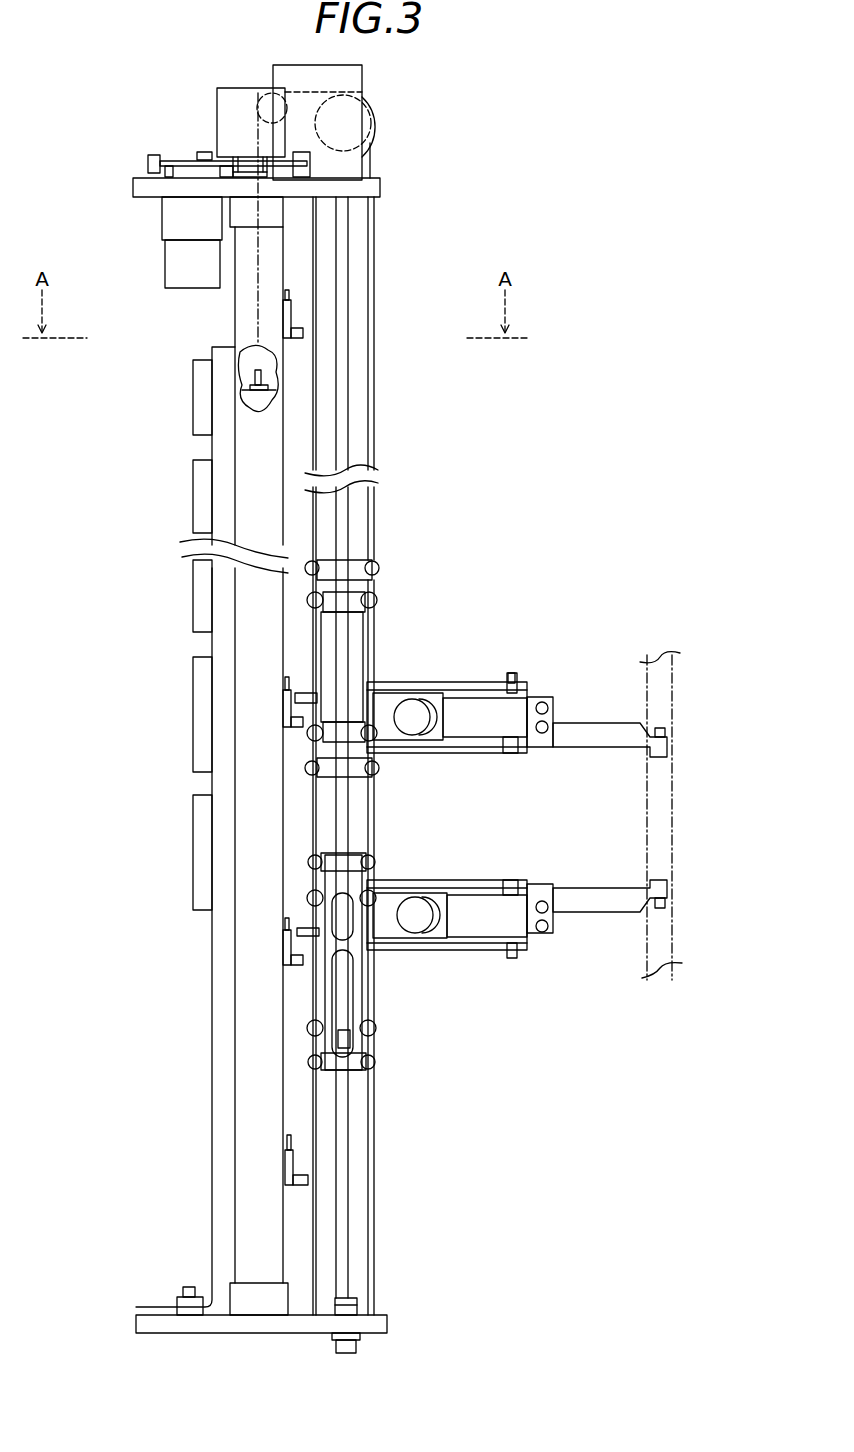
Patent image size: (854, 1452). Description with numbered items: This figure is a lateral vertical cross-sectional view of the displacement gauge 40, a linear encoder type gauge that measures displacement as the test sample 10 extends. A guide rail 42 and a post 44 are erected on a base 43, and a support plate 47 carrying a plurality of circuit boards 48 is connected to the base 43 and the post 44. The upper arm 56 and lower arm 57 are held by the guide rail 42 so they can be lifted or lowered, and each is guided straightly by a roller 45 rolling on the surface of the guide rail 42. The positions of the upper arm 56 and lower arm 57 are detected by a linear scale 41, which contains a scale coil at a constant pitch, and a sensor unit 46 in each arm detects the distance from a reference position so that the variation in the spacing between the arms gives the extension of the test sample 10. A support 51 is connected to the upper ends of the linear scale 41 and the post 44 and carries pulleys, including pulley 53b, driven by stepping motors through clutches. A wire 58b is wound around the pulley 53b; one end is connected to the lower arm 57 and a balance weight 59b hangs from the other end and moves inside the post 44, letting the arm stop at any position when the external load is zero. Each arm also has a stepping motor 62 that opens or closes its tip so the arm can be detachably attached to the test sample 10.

The displacement gauge 40 is at (542, 110).
The pulley 53b is at (367, 117).
The support 51 is at (370, 187).
The post 44 is at (250, 298).
The support plate 47 is at (213, 1093).
The circuit boards 48 is at (192, 500).
The balance weight 59b is at (250, 397).
The wire 58b is at (370, 404).
The guide rail 42 is at (362, 1225).
The linear scale 41 is at (347, 1180).
The roller 45 is at (370, 600).
The sensor unit 46 is at (345, 643).
The upper arm 56 is at (500, 645).
The lower arm 57 is at (507, 985).
The stepping motor 62 is at (410, 720).
The test sample 10 is at (672, 787).
The base 43 is at (375, 1327).